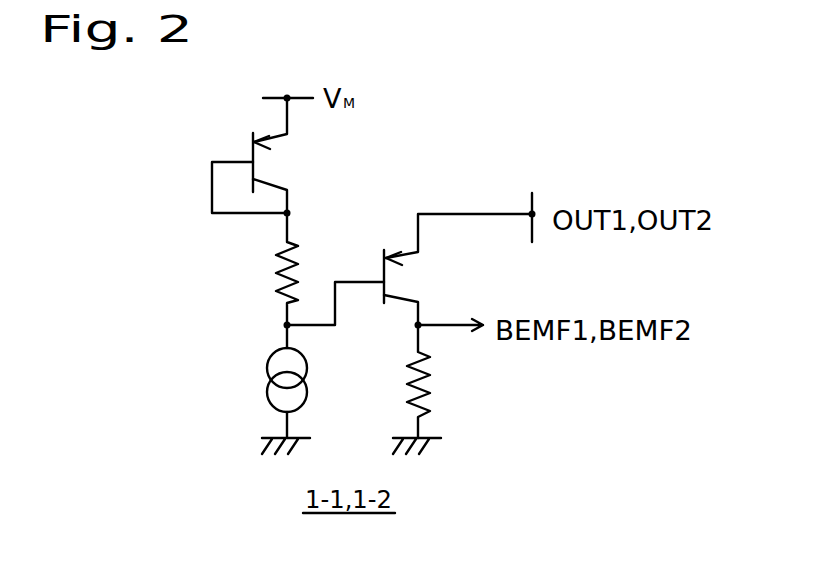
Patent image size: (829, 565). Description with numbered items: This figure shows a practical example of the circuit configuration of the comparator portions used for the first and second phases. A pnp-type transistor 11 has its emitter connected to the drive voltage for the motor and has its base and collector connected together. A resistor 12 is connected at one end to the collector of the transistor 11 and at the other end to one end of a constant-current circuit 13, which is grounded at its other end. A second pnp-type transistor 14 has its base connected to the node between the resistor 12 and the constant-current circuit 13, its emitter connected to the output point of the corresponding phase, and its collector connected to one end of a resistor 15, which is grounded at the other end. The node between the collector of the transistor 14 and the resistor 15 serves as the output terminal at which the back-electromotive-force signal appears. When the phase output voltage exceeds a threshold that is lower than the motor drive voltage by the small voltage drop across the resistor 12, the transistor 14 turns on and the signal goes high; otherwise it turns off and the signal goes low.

The pnp-type transistor 11 is at (282, 161).
The resistor 12 is at (272, 278).
The constant-current circuit 13 is at (257, 381).
The pnp-type transistor 14 is at (417, 278).
The resistor 15 is at (437, 389).